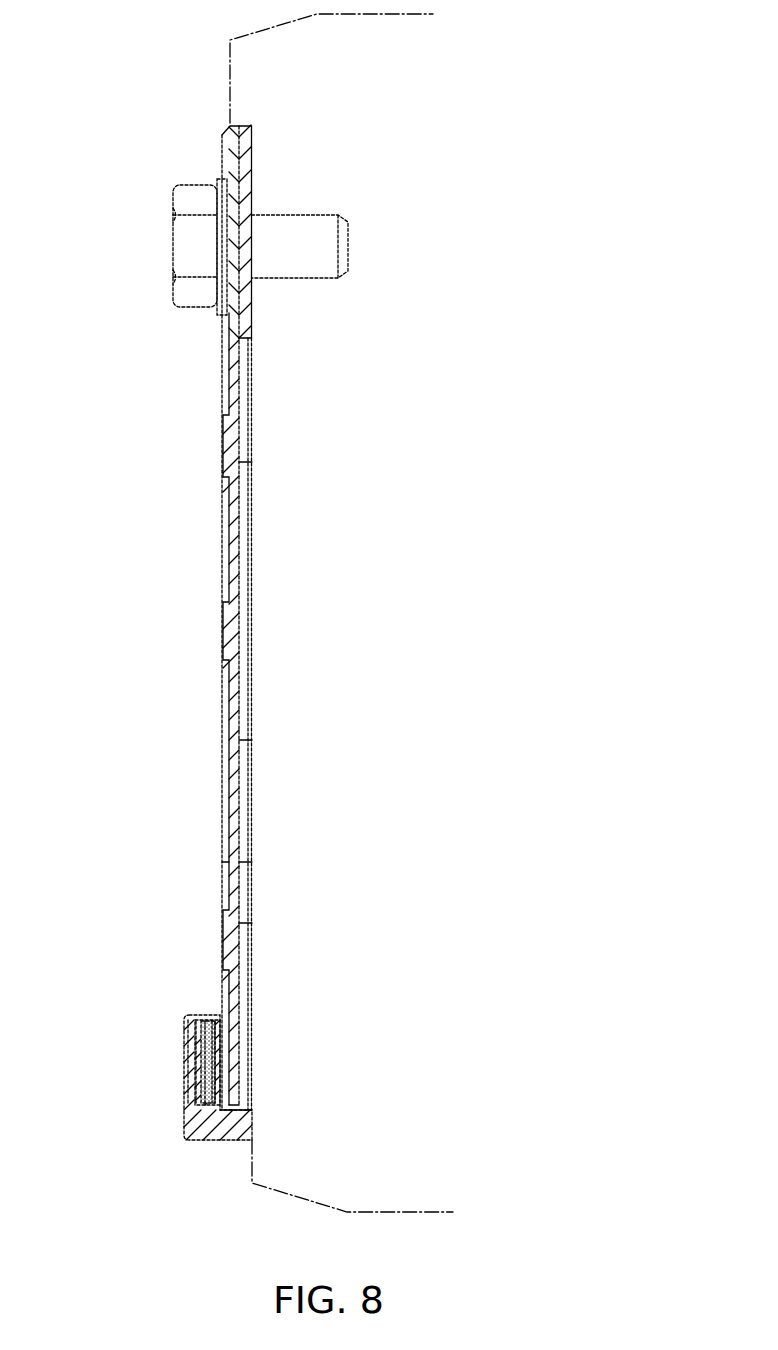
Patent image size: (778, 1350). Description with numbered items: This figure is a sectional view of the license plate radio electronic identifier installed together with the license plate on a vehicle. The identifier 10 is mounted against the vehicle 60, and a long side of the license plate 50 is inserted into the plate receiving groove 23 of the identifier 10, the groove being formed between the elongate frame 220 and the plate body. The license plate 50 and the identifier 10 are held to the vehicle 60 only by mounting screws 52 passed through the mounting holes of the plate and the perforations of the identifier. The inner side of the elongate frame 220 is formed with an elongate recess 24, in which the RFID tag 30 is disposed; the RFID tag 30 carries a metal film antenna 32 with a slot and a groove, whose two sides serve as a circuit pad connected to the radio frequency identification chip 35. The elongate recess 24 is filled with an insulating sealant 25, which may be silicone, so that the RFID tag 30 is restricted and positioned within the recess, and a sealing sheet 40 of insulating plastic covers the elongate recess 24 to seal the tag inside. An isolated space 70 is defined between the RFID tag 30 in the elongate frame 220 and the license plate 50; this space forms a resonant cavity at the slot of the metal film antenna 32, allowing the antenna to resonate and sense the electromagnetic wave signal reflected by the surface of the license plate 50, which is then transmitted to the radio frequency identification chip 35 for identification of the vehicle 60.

The identifier 10 is at (237, 627).
The plate receiving groove 23 is at (226, 1110).
The elongate recess 24 is at (200, 1015).
The insulating sealant 25 is at (207, 1018).
The RFID tag 30 is at (201, 1035).
The metal film antenna 32 is at (201, 1048).
The radio frequency identification chip 35 is at (197, 1070).
The sealing sheet 40 is at (212, 1110).
The license plate 50 is at (224, 447).
The mounting screw 52 is at (195, 252).
The vehicle 60 is at (388, 631).
The isolated space 70 is at (217, 1040).
The elongate frame 220 is at (187, 1067).